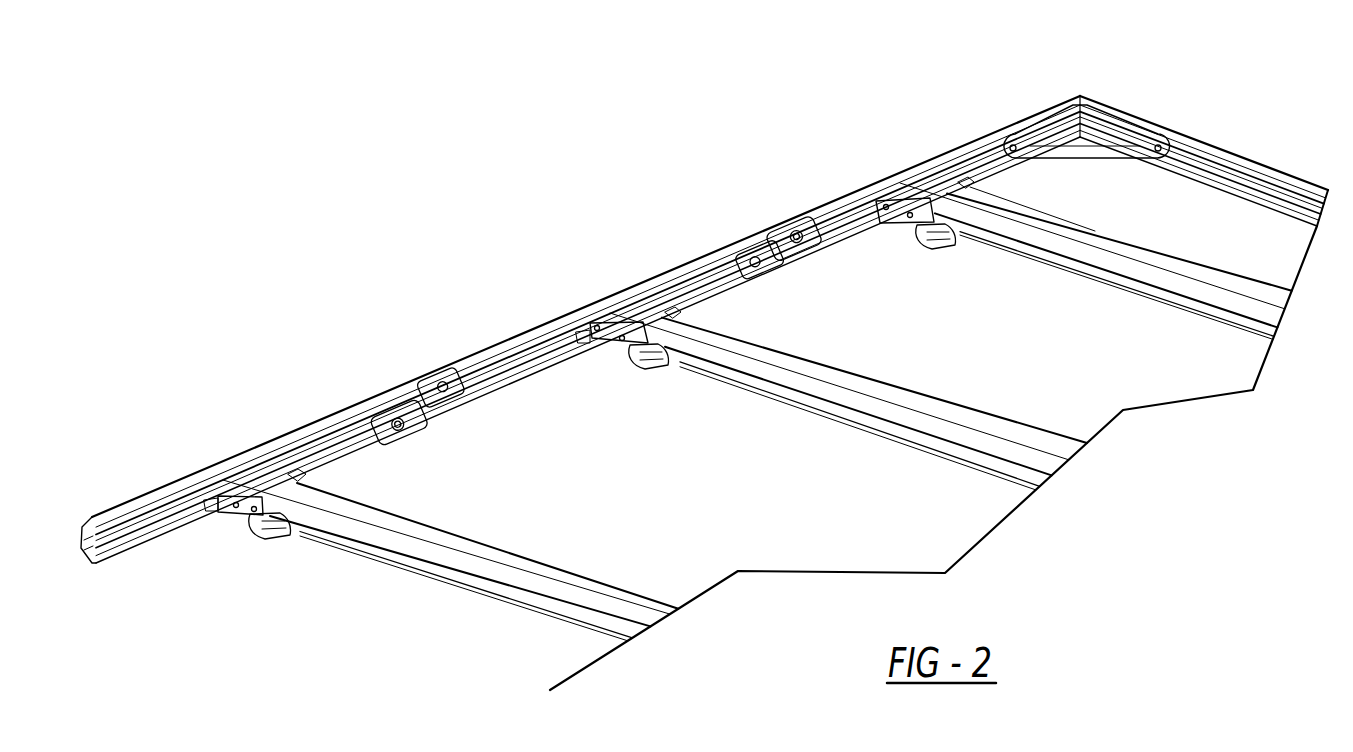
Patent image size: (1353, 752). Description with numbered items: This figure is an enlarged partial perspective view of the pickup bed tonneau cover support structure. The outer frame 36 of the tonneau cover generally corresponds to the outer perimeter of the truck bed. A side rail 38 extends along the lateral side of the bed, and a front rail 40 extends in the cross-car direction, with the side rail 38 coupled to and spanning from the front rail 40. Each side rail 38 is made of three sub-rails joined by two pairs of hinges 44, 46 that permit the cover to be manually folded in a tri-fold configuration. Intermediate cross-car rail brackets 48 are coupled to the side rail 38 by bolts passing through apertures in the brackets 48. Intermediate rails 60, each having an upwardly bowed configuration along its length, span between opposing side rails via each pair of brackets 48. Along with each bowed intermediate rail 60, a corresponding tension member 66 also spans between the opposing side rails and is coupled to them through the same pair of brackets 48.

The outer frame 36 is at (1199, 139).
The side rail 38 is at (508, 338).
The front rail 40 is at (1248, 163).
The hinge 44 is at (770, 230).
The hinge 46 is at (418, 394).
The intermediate cross-car rail bracket 48 is at (224, 502).
The intermediate rail 60 is at (523, 558).
The tension member 66 is at (524, 610).